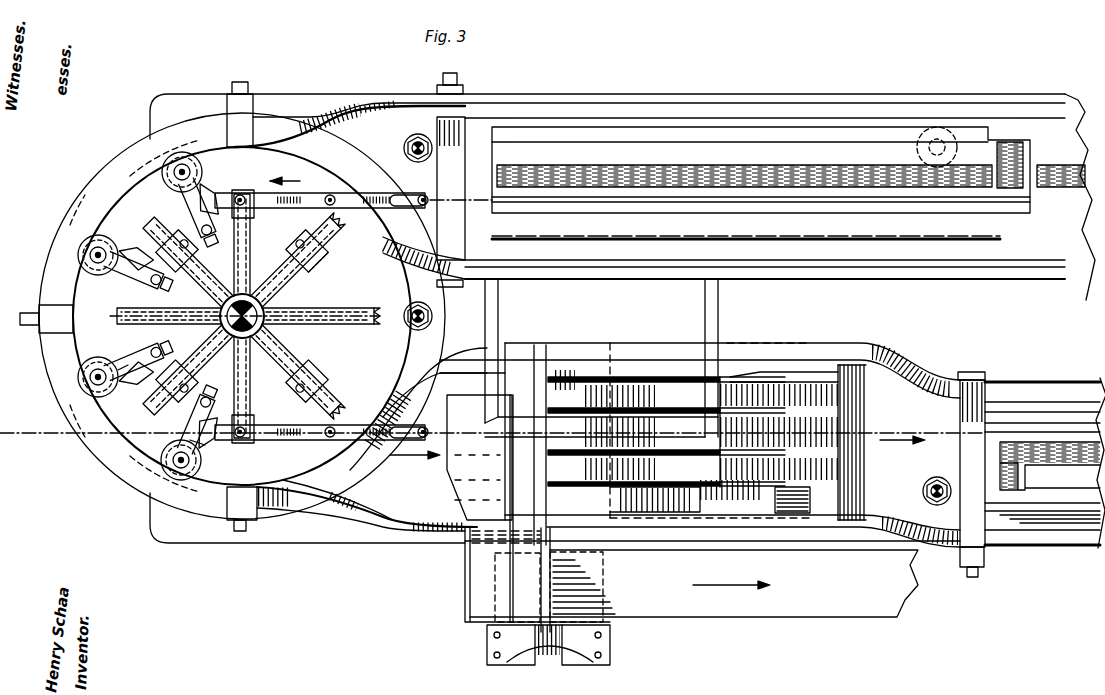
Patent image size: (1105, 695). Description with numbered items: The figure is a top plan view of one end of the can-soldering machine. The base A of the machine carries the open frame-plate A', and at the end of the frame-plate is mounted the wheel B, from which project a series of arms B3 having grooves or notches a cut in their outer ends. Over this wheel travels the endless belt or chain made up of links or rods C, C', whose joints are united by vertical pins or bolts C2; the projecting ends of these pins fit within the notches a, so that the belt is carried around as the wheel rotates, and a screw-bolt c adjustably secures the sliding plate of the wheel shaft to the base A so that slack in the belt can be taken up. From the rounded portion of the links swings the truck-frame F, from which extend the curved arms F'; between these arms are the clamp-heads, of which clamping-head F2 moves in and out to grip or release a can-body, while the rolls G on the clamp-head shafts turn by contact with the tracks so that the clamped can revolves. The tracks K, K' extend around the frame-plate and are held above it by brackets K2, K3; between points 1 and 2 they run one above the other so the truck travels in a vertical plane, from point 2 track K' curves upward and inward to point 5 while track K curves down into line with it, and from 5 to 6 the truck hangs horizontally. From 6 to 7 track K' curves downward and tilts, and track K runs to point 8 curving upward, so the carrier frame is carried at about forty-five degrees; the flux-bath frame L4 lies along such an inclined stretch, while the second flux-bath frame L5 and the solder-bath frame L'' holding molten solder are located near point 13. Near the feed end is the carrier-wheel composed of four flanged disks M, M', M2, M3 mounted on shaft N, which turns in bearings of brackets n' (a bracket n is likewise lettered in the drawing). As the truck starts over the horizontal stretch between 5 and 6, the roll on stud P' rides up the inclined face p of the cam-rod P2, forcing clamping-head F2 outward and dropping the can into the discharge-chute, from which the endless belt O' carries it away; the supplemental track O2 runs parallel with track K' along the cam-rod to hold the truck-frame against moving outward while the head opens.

The base A is at (607, 336).
The open frame-plate A' is at (227, 316).
The bracket K2 is at (52, 326).
The wheel B is at (245, 316).
The arm B3 is at (322, 257).
The groove or notch a is at (380, 315).
The roll G is at (96, 397).
The truck-frame F is at (168, 316).
The curved arm F' is at (212, 458).
The clamping-head F2 is at (105, 388).
The link or rod C is at (320, 316).
The screw-bolt c is at (375, 193).
The link or rod C' is at (394, 300).
The vertical pin or bolt C2 is at (429, 200).
The point on tracks 1 is at (222, 145).
The point on tracks 2 is at (224, 500).
The bracket K3 is at (248, 92).
The track K is at (367, 526).
The track K' is at (338, 487).
The point on tracks 5 is at (482, 362).
The point on tracks 13 is at (424, 97).
The solder-bath frame L'' is at (765, 198).
The flux-bath frame L5 is at (1072, 165).
The point on tracks 6 is at (872, 358).
The point on tracks 7 is at (957, 380).
The point on tracks 8 is at (962, 550).
The flux-bath frame L4 is at (1062, 472).
The stud P' is at (616, 358).
The cam-rod P2 is at (532, 432).
The inclined face p is at (477, 466).
The flanged disk M3 is at (551, 377).
The flanged disk M2 is at (566, 409).
The flanged disk M' is at (666, 460).
The flanged disk M is at (666, 497).
The supplemental track O2 is at (640, 396).
The plate n is at (798, 417).
The bracket n' is at (755, 499).
The shaft N is at (705, 490).
The endless belt O' is at (712, 591).